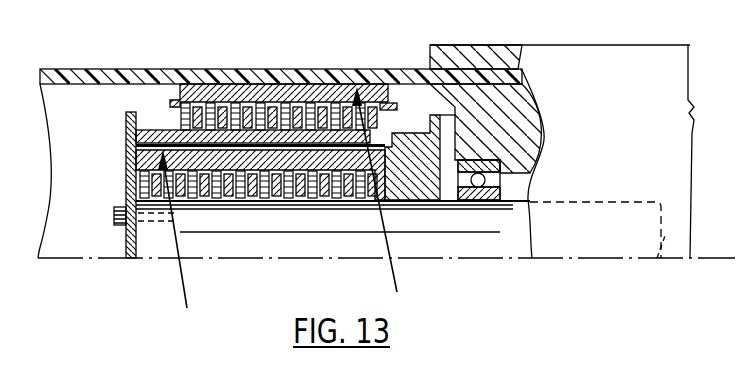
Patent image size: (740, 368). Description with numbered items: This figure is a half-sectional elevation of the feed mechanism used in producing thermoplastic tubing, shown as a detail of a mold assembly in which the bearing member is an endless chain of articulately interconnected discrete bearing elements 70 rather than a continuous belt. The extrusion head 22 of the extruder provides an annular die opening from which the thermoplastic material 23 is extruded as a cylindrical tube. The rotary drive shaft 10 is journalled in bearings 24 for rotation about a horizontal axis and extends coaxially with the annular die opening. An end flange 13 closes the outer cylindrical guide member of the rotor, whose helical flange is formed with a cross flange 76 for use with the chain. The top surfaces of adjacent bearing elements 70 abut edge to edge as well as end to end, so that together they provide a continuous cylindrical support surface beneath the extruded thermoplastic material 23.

The rotary drive shaft 10 is at (243, 242).
The end flange 13 is at (125, 177).
The extrusion head 22 is at (480, 57).
The thermoplastic material 23 is at (143, 69).
The bearings 24 is at (493, 193).
The bearing element 70 is at (218, 69).
The cross flange 76 is at (177, 100).